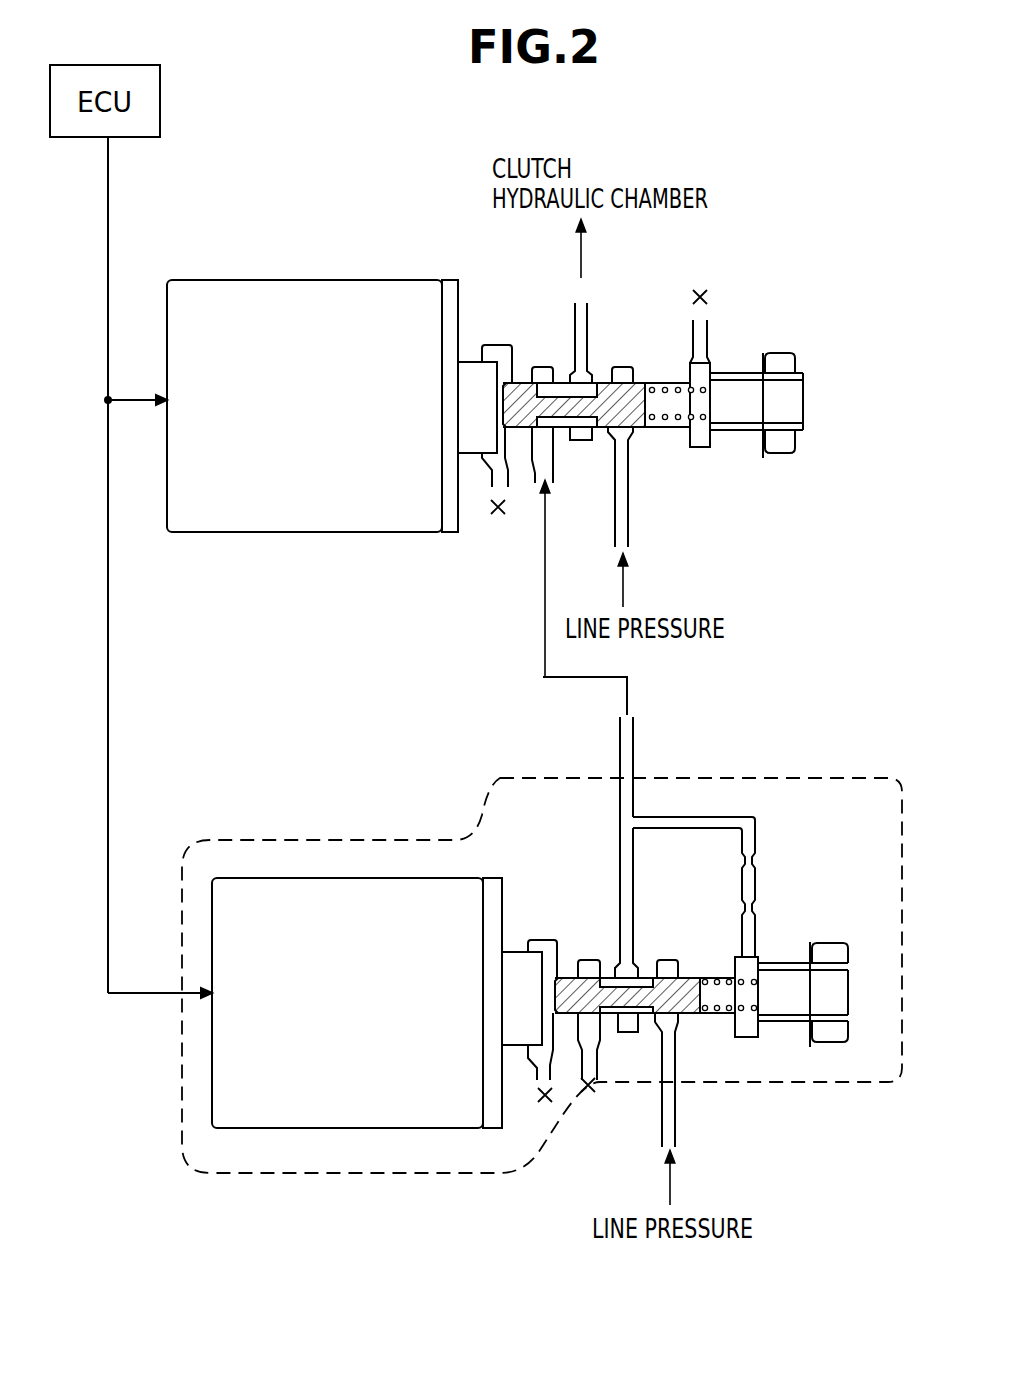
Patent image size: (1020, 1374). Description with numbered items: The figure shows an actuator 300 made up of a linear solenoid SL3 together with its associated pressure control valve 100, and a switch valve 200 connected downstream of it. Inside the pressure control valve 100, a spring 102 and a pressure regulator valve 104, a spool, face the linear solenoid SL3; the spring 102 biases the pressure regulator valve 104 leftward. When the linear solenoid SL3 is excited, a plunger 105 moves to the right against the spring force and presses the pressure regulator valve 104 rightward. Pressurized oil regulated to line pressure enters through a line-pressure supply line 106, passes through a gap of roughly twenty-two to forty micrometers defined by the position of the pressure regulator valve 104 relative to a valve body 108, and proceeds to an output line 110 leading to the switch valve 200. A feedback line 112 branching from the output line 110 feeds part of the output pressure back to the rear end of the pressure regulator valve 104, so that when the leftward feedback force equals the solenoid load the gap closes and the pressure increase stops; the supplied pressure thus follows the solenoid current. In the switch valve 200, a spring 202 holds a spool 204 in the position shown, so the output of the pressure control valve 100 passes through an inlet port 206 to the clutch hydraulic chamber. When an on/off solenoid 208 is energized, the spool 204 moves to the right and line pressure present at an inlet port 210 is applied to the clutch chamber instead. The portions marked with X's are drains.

The pressure control valve 100 is at (778, 934).
The spring 102 is at (730, 978).
The pressure regulator valve 104 is at (585, 990).
The plunger 105 is at (548, 990).
The line-pressure supply line 106 is at (675, 1108).
The valve body 108 is at (612, 1020).
The output line 110 is at (620, 748).
The feedback line 112 is at (755, 828).
The switch valve 200 is at (496, 532).
The spring 202 is at (676, 386).
The spool 204 is at (518, 395).
The inlet port 206 is at (533, 457).
The on/off solenoid 208 is at (280, 330).
The inlet port 210 is at (628, 500).
The actuator 300 is at (827, 1083).
The linear solenoid SL3 is at (317, 933).